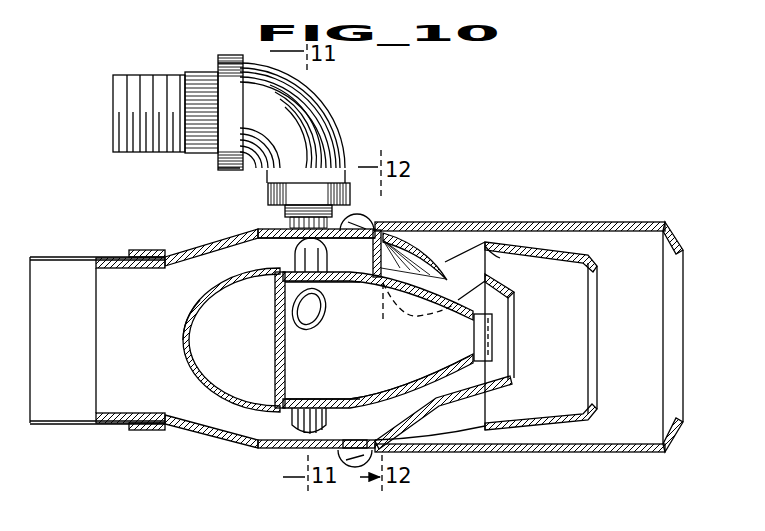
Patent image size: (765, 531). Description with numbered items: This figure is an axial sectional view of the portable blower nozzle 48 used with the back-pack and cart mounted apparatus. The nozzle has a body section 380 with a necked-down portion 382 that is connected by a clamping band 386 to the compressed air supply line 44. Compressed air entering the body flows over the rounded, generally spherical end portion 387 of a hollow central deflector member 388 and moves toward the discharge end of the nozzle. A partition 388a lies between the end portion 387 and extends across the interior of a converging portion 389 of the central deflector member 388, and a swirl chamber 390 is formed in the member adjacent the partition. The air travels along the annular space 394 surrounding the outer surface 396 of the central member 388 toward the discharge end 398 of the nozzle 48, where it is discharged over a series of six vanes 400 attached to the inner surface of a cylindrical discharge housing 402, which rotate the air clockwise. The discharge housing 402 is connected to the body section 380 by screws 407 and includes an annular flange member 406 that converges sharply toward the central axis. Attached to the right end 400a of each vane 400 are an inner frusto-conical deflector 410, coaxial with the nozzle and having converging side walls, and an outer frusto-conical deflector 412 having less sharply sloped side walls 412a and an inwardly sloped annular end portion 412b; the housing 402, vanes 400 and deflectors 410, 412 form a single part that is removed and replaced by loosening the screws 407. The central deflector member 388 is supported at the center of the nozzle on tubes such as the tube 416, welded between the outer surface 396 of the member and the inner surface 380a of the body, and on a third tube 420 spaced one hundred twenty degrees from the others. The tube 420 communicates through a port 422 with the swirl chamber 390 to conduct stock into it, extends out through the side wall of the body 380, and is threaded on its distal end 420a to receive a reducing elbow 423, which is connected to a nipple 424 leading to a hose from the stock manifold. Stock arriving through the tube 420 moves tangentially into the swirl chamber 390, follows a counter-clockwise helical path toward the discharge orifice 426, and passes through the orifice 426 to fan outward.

The compressed air supply line 44 is at (60, 257).
The blower nozzle 48 is at (557, 323).
The body section 380 is at (255, 232).
The inner surface of the body 380a is at (280, 438).
The necked-down portion 382 is at (120, 262).
The clamping band 386 is at (145, 250).
The rounded end portion 387 is at (183, 335).
The central deflector member 388 is at (192, 300).
The partition 388a is at (276, 348).
The converging portion 389 is at (345, 399).
The swirl chamber 390 is at (370, 352).
The annular space 394 is at (272, 268).
The outer surface 396 is at (352, 257).
The discharge end 398 is at (684, 370).
The vanes 400 is at (447, 262).
The right end of the vanes 400a is at (489, 252).
The cylindrical discharge housing 402 is at (585, 222).
The annular flange member 406 is at (676, 240).
The screws 407 is at (362, 215).
The inner frusto-conical deflector 410 is at (503, 287).
The outer frusto-conical deflector 412 is at (543, 422).
The side walls 412a is at (560, 250).
The inwardly sloped annular end portion 412b is at (591, 262).
The tube 416 is at (308, 420).
The third tube 420 is at (298, 255).
The distal end 420a is at (281, 210).
The port 422 is at (312, 304).
The reducing elbow 423 is at (310, 118).
The nipple 424 is at (174, 82).
The discharge orifice 426 is at (474, 330).